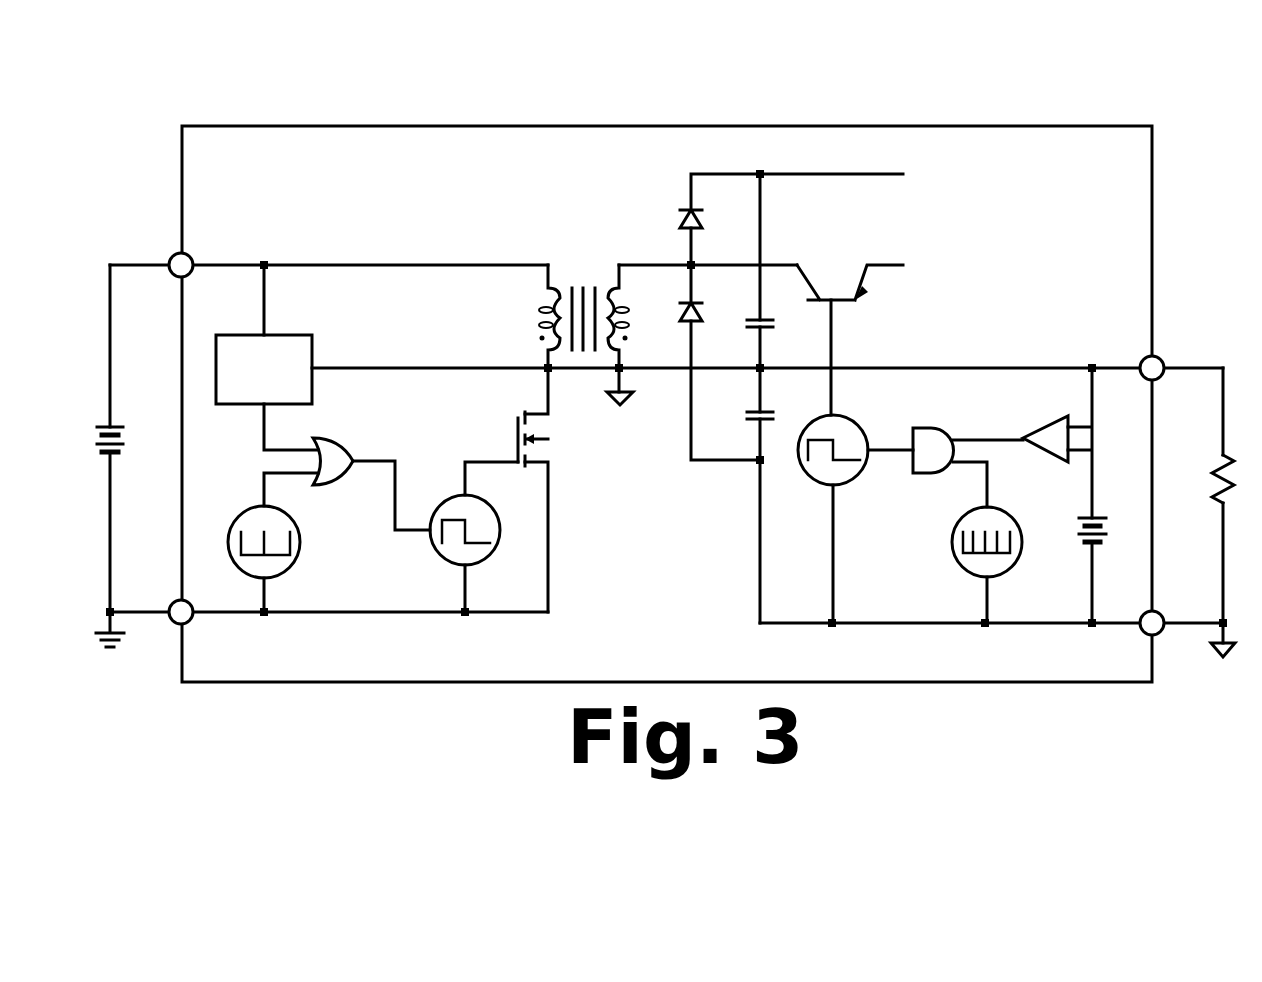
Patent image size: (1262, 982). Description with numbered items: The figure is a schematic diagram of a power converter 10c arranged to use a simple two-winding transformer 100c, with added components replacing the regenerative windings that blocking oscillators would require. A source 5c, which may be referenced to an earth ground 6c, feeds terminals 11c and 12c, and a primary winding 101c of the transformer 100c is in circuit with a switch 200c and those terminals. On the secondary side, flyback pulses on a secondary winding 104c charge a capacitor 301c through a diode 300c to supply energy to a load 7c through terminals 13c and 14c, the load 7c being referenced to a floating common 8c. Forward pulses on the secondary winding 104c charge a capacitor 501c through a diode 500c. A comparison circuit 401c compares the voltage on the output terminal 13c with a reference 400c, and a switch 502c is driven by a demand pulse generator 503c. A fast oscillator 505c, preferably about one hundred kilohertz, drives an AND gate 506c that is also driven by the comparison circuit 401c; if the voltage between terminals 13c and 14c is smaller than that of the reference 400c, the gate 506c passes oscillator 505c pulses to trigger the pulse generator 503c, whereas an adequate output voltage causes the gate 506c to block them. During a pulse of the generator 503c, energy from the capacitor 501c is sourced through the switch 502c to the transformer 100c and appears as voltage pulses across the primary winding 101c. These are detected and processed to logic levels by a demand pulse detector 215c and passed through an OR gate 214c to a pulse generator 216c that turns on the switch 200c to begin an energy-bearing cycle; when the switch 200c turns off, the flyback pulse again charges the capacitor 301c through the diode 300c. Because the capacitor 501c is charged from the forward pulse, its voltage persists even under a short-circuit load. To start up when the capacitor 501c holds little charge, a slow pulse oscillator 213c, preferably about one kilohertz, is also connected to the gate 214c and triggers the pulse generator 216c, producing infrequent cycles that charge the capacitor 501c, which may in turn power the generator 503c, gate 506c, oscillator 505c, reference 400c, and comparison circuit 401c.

The power converter 10c is at (560, 179).
The terminal 11c is at (172, 255).
The terminal 12c is at (190, 628).
The output terminal 13c is at (1163, 355).
The terminal 14c is at (1175, 603).
The source 5c is at (118, 425).
The earth ground 6c is at (118, 646).
The load 7c is at (1217, 482).
The floating common 8c is at (1210, 653).
The demand pulse detector 215c is at (312, 342).
The OR gate 214c is at (372, 441).
The slow pulse oscillator 213c is at (247, 512).
The pulse generator 216c is at (433, 551).
The switch 200c is at (514, 438).
The primary winding 101c is at (537, 326).
The secondary winding 104c is at (615, 282).
The transformer 100c is at (583, 354).
The diode 500c is at (687, 216).
The diode 300c is at (680, 294).
The switch 502c is at (833, 298).
The capacitor 501c is at (773, 329).
The capacitor 301c is at (747, 425).
The demand pulse generator 503c is at (877, 415).
The AND gate 506c is at (923, 470).
The fast oscillator 505c is at (950, 559).
The comparison circuit 401c is at (1048, 428).
The reference 400c is at (1080, 544).